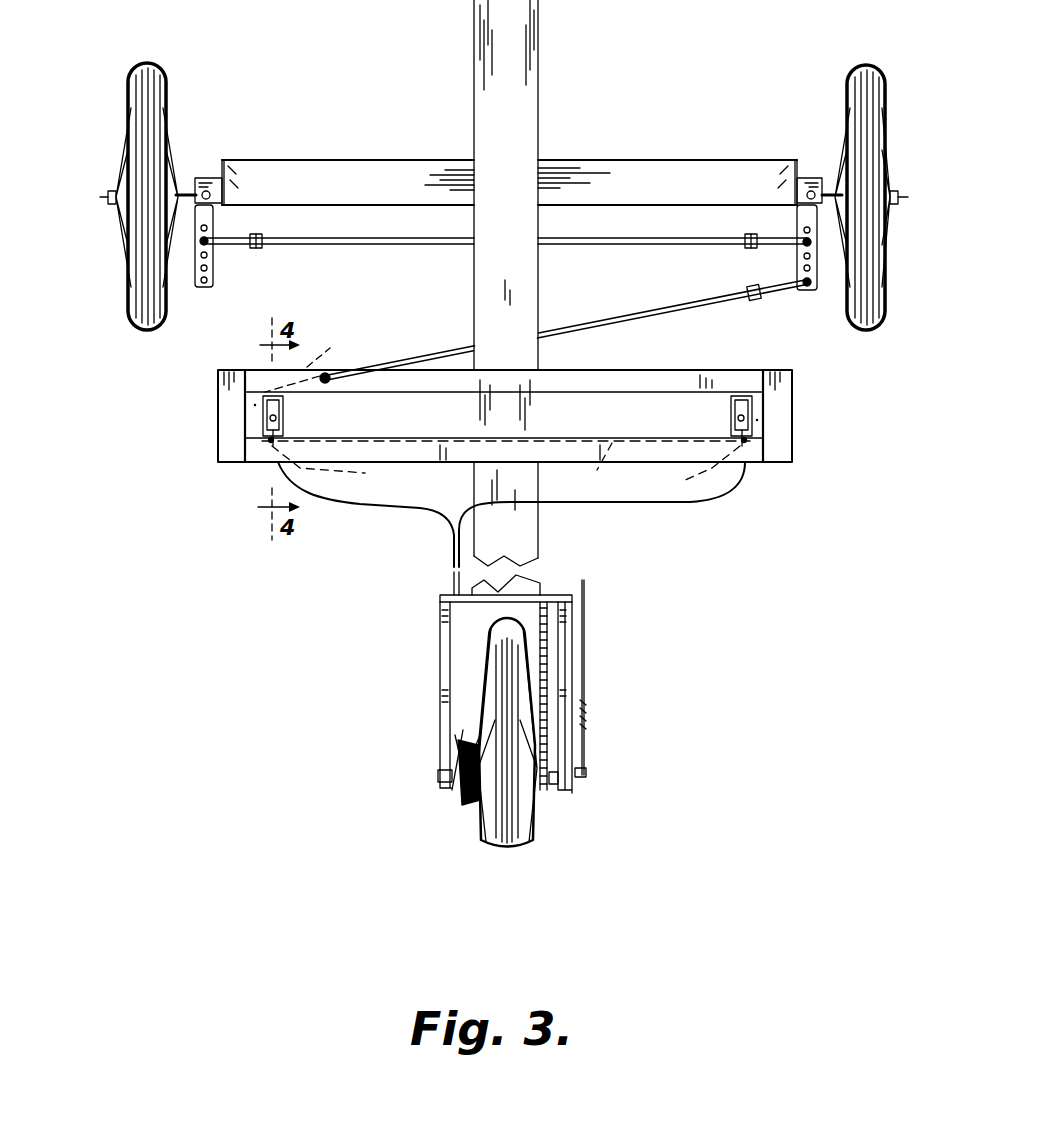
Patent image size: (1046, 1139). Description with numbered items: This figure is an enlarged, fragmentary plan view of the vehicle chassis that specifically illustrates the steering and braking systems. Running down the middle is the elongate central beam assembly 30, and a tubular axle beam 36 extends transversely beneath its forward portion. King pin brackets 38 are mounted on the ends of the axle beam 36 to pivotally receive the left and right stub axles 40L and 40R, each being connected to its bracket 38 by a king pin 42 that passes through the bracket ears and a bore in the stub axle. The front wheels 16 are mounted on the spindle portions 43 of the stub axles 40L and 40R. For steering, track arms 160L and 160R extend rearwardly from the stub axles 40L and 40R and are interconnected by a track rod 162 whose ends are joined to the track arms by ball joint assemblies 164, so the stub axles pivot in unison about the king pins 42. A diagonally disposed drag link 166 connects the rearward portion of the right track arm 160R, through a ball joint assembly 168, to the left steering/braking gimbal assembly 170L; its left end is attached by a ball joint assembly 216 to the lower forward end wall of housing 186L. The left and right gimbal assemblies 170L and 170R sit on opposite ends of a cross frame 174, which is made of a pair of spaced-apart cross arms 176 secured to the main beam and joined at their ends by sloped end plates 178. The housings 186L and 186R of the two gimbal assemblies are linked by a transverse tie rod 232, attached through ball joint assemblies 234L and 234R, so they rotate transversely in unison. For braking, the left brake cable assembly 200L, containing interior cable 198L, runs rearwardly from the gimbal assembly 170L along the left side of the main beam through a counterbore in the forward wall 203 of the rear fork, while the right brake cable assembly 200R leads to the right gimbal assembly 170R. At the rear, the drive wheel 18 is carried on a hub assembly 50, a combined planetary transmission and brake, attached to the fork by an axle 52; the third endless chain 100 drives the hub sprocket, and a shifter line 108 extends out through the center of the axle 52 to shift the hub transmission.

The front wheels 16 is at (150, 62).
The rear drive wheel 18 is at (518, 850).
The central beam assembly 30 is at (410, 112).
The axle beam 36 is at (568, 160).
The king pin brackets 38 is at (212, 180).
The left stub axle 40L is at (186, 182).
The right stub axle 40R is at (823, 182).
The king pins 42 is at (211, 192).
The spindle portions 43 is at (108, 197).
The hub assembly 50 is at (556, 792).
The axle 52 is at (576, 778).
The third endless chain 100 is at (547, 677).
The shifter line 108 is at (586, 695).
The left track arm 160L is at (197, 288).
The right track arm 160R is at (822, 290).
The track rod 162 is at (624, 253).
The ball joint assemblies 164 is at (228, 247).
The drag link 166 is at (570, 326).
The ball joint assembly 168 is at (767, 299).
The left steering/braking gimbal assembly 170L is at (240, 407).
The right steering/braking gimbal assembly 170R is at (765, 422).
The cross frame 174 is at (447, 496).
The cross arms 176 is at (395, 453).
The sloped end plates 178 is at (220, 385).
The left housing 186L is at (286, 412).
The right housing 186R is at (730, 412).
The interior cable 198L is at (467, 660).
The left brake cable assembly 200L is at (343, 500).
The right brake cable assembly 200R is at (650, 504).
The forward wall 203 is at (560, 595).
The ball joint assembly 216 is at (314, 356).
The transverse tie rod 232 is at (581, 470).
The left ball joint assembly 234L is at (345, 470).
The right ball joint assembly 234R is at (680, 472).